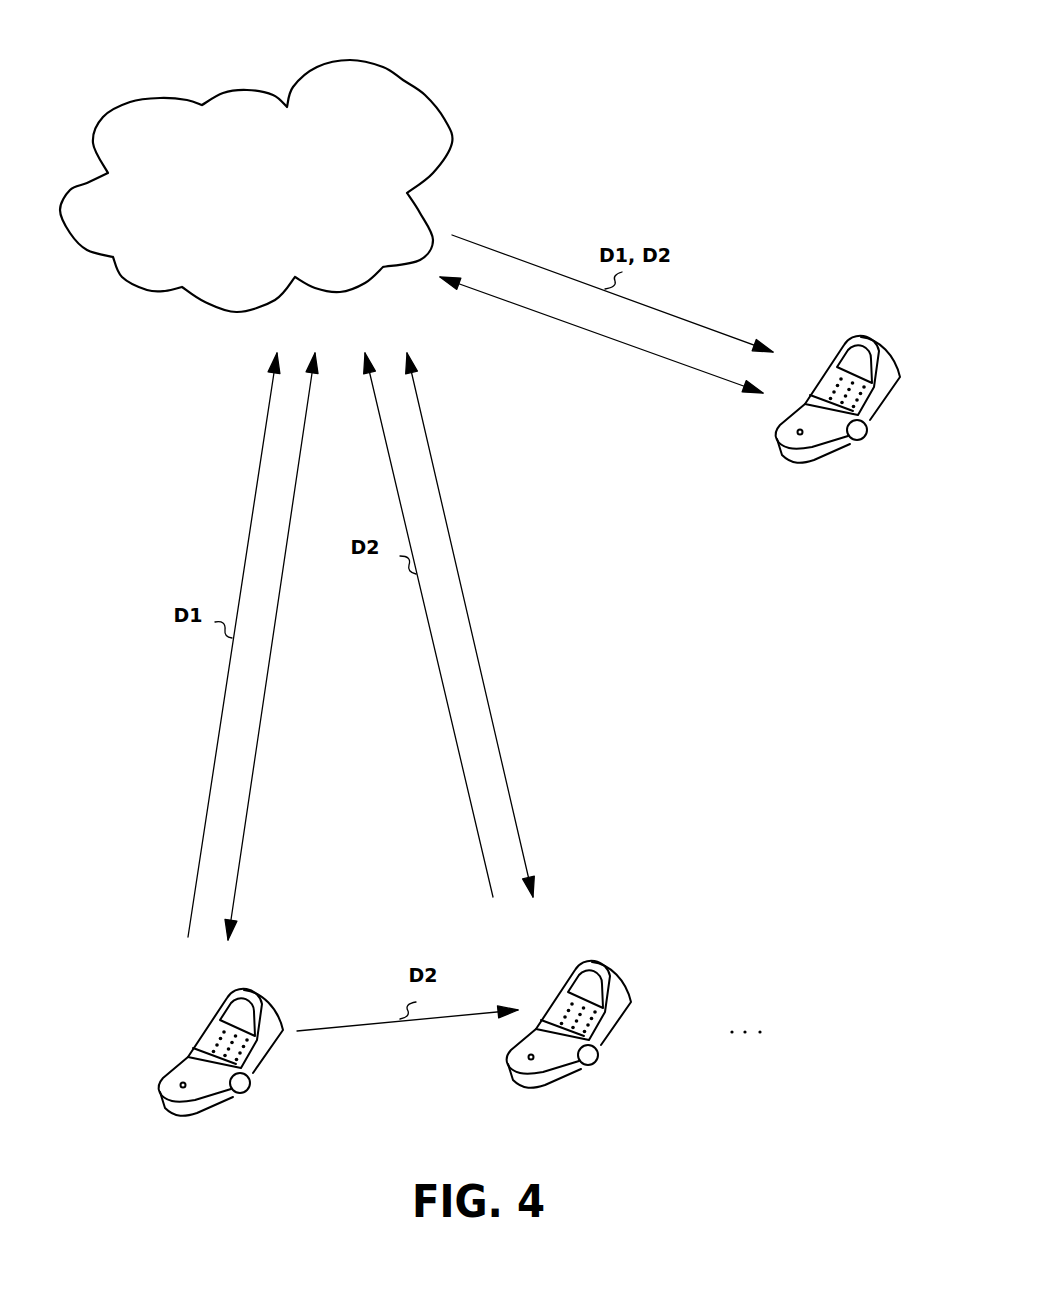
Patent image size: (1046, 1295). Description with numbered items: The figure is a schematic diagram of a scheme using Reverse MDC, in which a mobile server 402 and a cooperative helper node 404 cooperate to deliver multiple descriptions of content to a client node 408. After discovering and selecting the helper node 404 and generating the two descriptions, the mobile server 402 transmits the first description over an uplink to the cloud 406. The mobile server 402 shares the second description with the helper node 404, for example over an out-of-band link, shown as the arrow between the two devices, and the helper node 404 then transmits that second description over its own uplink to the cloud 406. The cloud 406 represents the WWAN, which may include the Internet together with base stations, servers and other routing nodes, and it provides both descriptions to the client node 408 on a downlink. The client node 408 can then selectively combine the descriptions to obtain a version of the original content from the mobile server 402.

The mobile server 402 is at (253, 998).
The cooperative helper node 404 is at (598, 966).
The cloud 406 is at (352, 59).
The client node 408 is at (870, 352).